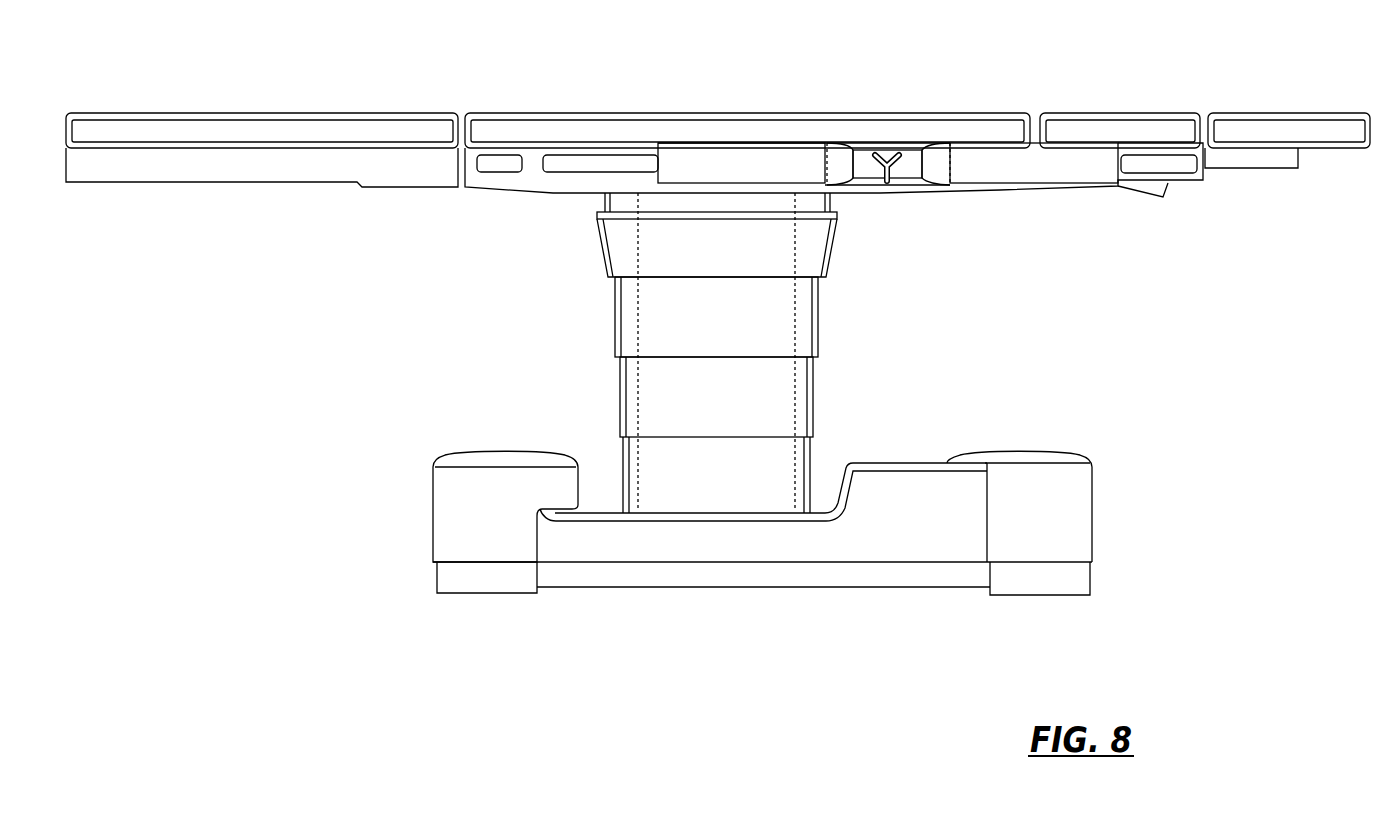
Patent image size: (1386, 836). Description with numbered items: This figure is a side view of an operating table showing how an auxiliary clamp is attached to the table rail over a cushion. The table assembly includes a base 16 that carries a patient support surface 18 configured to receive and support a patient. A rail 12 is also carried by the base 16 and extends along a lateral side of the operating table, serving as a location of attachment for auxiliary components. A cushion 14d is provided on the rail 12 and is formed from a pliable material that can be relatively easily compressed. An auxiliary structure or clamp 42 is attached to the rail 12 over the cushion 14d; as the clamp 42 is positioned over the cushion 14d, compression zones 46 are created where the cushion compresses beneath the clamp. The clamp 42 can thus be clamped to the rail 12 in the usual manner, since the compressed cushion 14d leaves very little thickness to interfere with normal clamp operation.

The rail 12 is at (565, 160).
The cushion 14d is at (685, 158).
The base 16 is at (555, 183).
The patient support surface 18 is at (487, 127).
The clamp 42 is at (890, 148).
The compression zones 46 is at (848, 181).